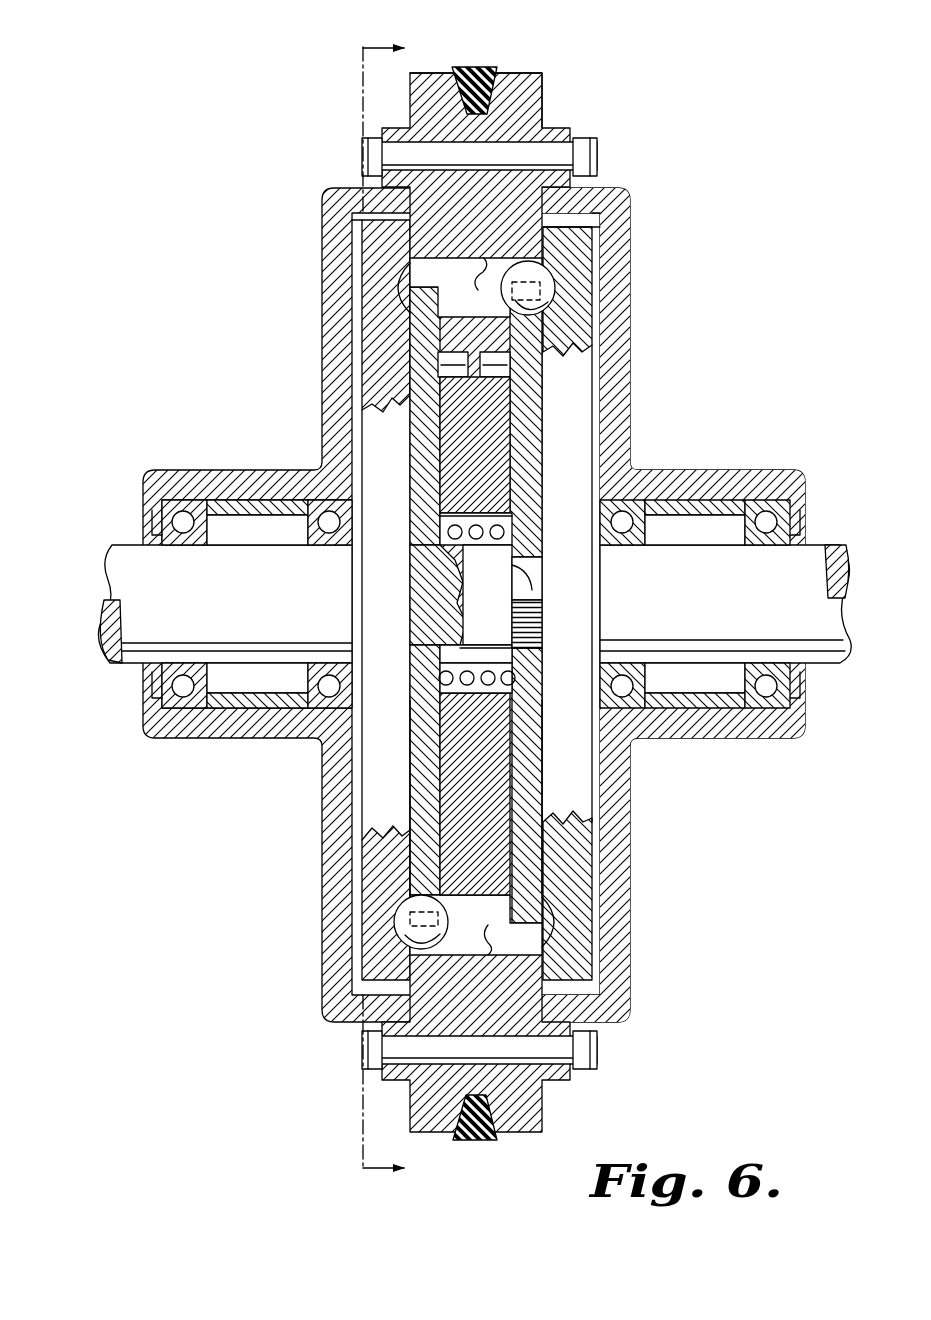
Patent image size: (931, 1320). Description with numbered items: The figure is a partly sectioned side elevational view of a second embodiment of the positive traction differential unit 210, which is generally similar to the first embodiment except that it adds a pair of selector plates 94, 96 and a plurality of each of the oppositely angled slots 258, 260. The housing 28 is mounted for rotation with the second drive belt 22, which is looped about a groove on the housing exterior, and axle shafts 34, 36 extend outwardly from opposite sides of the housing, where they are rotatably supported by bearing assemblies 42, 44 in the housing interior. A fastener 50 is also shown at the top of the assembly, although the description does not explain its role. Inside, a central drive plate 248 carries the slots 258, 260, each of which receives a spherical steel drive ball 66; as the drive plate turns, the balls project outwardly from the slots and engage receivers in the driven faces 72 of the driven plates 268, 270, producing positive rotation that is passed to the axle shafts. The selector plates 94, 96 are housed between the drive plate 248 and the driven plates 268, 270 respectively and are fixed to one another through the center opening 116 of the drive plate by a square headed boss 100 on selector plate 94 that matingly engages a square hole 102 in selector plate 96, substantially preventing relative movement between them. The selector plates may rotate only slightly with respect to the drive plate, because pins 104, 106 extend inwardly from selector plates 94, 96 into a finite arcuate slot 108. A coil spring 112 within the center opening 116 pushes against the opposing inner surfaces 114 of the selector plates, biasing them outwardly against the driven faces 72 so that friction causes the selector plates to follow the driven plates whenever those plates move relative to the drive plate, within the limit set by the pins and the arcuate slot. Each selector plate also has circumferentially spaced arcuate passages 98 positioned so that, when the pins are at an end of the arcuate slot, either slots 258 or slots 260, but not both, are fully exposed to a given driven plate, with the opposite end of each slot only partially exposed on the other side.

The differential unit 210 is at (474, 602).
The second drive belt 22 is at (490, 70).
The drive plate 248 is at (523, 103).
The bolt 50 is at (365, 155).
The housing 28 is at (249, 470).
The driven plate 268 is at (386, 262).
The driven plate 270 is at (572, 880).
The drive ball 66 is at (535, 275).
The arcuate passages 98 is at (525, 298).
The slots 258 is at (476, 287).
The slots 260 is at (476, 924).
The driven face 72 is at (412, 333).
The arcuate slot 108 is at (500, 366).
The pin 106 is at (497, 398).
The pin 104 is at (441, 440).
The center opening 116 is at (490, 490).
The inner surfaces 114 is at (432, 500).
The coil spring 112 is at (445, 678).
The square hole 102 is at (530, 600).
The square headed boss 100 is at (522, 628).
The selector plate 94 is at (423, 753).
The selector plate 96 is at (525, 758).
The axle shaft 34 is at (222, 605).
The axle shaft 36 is at (759, 607).
The bearing assembly 42 is at (328, 668).
The bearing assembly 44 is at (750, 706).